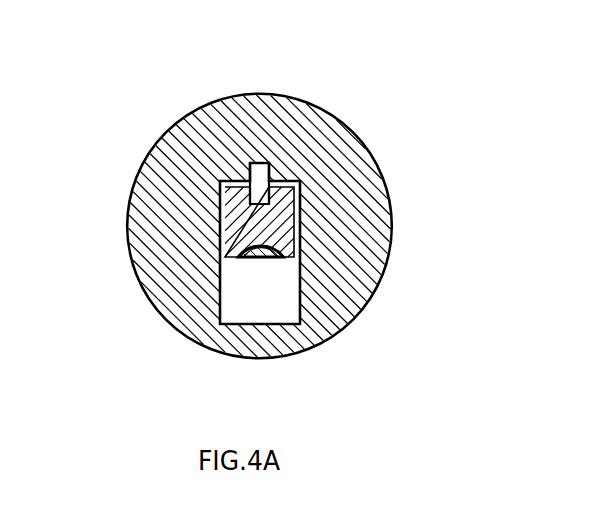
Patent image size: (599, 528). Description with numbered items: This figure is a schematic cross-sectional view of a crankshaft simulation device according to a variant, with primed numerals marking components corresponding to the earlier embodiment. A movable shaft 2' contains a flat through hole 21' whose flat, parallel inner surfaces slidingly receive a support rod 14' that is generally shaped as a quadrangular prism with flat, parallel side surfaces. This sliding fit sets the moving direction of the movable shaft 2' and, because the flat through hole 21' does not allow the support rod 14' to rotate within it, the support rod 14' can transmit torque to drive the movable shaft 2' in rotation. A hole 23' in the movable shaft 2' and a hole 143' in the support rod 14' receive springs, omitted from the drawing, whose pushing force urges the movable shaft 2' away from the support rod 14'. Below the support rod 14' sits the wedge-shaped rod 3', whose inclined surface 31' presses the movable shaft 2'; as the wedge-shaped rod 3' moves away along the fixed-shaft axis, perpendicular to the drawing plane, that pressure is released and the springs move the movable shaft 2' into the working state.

The movable shaft 2' is at (261, 231).
The flat through hole 21' is at (215, 261).
The hole 23' is at (291, 128).
The support rod 14' is at (184, 222).
The hole 143' is at (351, 198).
The wedge-shaped rod 3' is at (282, 325).
The inclined surface 31' is at (282, 325).